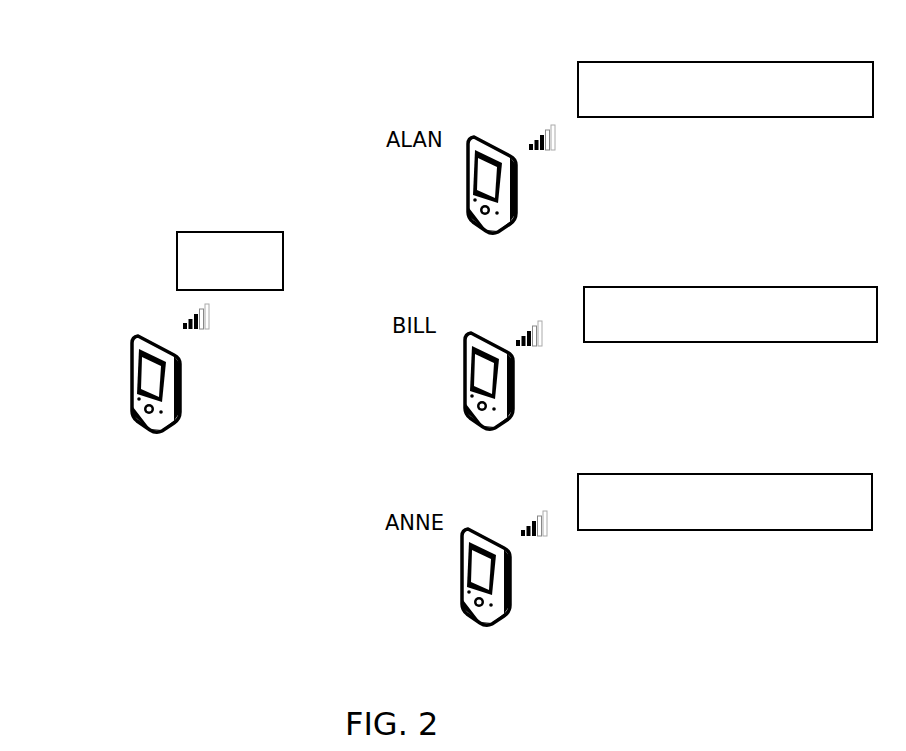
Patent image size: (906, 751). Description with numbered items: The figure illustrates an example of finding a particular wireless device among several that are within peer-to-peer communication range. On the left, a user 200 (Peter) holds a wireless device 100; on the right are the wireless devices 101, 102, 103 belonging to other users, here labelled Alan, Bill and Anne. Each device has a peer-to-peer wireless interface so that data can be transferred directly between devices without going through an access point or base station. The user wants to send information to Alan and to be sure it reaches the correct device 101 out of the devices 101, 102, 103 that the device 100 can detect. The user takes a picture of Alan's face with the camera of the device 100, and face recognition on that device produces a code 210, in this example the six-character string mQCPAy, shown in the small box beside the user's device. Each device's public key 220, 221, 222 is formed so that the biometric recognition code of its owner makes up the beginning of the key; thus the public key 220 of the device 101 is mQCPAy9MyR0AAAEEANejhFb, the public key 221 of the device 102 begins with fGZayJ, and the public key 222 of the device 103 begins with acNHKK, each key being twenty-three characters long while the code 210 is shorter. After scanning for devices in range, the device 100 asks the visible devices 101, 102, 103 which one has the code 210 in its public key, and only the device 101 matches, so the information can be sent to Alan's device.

The wireless device 100 is at (176, 380).
The user (Peter) 200 is at (157, 347).
The wireless device 101 is at (518, 177).
The wireless device 102 is at (513, 387).
The wireless device 103 is at (510, 578).
The code 210 is at (258, 231).
The public key 220 is at (648, 63).
The public key 221 is at (632, 288).
The public key 222 is at (643, 475).